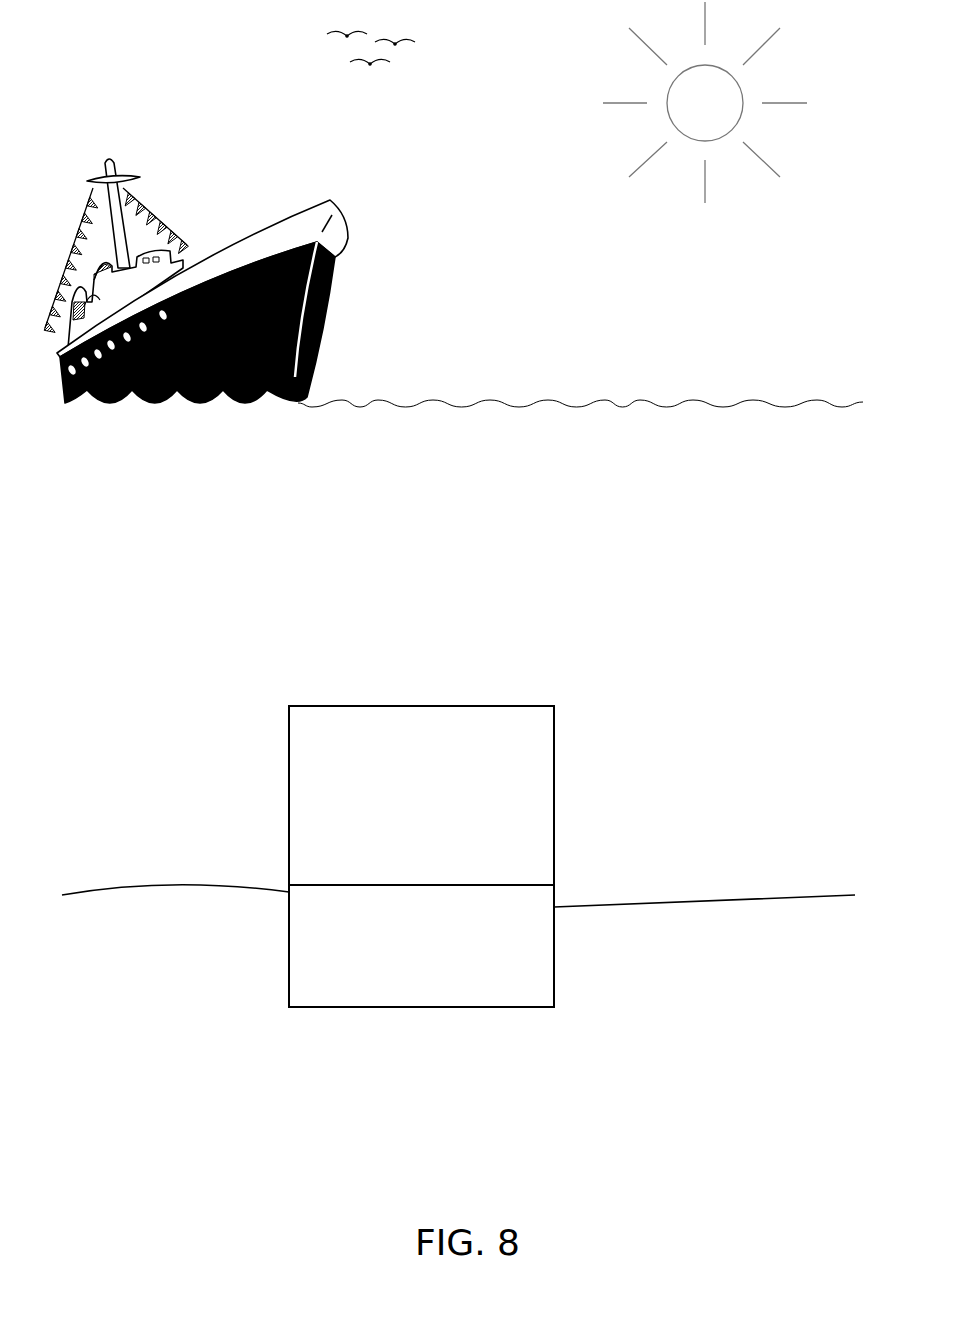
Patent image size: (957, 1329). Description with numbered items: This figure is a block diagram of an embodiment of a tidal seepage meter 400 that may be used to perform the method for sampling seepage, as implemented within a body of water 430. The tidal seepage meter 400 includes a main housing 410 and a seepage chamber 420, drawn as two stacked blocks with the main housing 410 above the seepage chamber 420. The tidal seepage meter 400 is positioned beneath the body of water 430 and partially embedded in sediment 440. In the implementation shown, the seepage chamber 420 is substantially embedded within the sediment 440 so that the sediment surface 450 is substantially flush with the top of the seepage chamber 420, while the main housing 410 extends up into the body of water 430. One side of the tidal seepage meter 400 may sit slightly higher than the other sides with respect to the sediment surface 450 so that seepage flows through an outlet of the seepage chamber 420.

The tidal seepage meter 400 is at (490, 856).
The main housing 410 is at (533, 850).
The seepage chamber 420 is at (627, 867).
The body of water 430 is at (722, 564).
The sediment 440 is at (810, 1102).
The sediment surface 450 is at (818, 895).